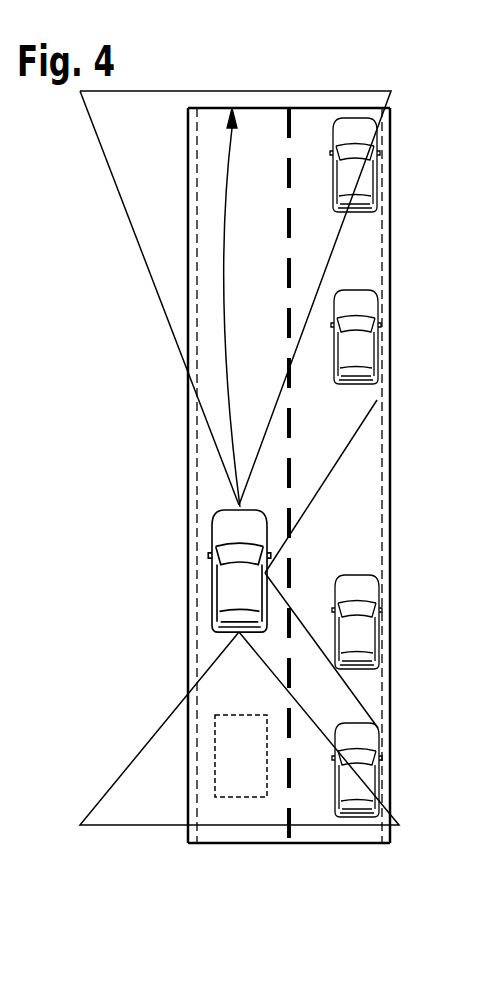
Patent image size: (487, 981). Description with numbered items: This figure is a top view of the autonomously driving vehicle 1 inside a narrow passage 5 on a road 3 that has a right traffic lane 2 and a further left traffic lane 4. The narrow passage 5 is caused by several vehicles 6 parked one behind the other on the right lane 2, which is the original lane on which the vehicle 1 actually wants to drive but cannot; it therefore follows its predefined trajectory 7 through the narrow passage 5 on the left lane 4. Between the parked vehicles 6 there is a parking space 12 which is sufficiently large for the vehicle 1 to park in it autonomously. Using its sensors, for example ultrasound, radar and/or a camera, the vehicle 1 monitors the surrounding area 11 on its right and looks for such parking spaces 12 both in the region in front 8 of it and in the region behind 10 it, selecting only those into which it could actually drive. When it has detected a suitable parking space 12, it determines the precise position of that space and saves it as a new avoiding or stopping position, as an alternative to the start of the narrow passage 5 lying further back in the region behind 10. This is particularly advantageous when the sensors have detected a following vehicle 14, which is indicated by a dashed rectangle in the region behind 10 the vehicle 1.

The vehicle 1 is at (242, 585).
The right traffic lane 2 is at (357, 252).
The road 3 is at (155, 422).
The left traffic lane 4 is at (215, 646).
The narrow passage 5 is at (197, 485).
The parked vehicles 6 is at (357, 632).
The trajectory 7 is at (223, 313).
The region in front 8 is at (114, 183).
The region behind 10 is at (167, 765).
The surrounding area on the right 11 is at (335, 522).
The parking space 12 is at (360, 468).
The following vehicle 14 is at (240, 798).